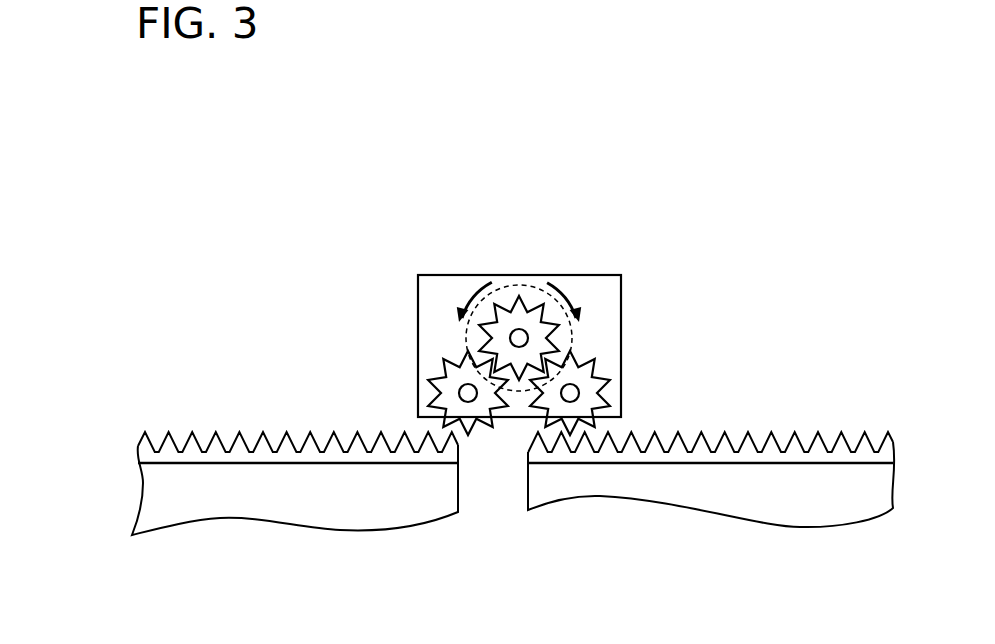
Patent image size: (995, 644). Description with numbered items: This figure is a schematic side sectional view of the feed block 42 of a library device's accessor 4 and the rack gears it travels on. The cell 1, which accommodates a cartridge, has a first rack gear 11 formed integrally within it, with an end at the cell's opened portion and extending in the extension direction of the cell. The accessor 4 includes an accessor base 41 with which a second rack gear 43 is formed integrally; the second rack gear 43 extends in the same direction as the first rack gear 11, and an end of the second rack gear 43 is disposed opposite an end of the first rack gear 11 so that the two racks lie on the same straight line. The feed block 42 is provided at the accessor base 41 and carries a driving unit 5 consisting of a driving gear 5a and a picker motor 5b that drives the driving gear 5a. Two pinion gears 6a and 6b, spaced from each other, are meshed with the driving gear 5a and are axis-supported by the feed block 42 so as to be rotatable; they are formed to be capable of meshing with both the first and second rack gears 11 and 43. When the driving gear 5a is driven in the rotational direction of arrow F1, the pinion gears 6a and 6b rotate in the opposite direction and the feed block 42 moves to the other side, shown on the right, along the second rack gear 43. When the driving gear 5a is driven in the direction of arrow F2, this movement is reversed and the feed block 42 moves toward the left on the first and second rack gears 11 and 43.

The cell 1 is at (711, 474).
The first rack gear 11 is at (760, 425).
The accessor 4 is at (235, 473).
The accessor base 41 is at (152, 484).
The second rack gear 43 is at (285, 424).
The feed block 42 is at (455, 262).
The driving unit 5 is at (515, 131).
The driving gear 5a is at (525, 296).
The picker motor 5b is at (512, 285).
The pinion gear 6a is at (603, 378).
The pinion gear 6b is at (440, 372).
The rotational direction arrow F1 is at (470, 300).
The rotational direction arrow F2 is at (565, 298).